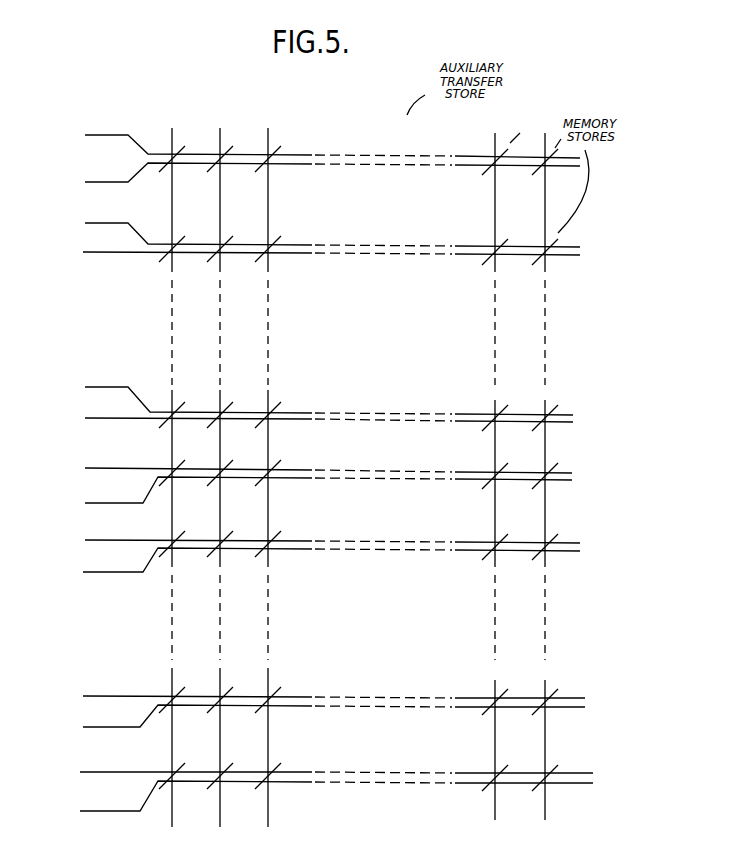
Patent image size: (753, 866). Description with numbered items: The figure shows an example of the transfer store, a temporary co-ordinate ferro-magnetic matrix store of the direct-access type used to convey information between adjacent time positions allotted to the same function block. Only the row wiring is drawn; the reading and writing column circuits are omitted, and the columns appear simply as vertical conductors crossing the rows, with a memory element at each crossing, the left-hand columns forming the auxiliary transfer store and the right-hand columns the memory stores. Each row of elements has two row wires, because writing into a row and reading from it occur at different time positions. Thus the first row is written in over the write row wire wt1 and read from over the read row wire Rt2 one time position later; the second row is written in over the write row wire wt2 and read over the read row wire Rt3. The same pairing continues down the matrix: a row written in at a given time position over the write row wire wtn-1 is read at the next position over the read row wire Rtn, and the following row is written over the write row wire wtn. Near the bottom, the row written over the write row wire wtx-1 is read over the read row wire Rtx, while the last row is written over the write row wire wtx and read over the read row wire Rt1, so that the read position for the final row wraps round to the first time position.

The write row wire wt1 is at (320, 137).
The read row wire Rt2 is at (318, 172).
The write row wire wt2 is at (317, 226).
The read row wire Rt3 is at (315, 264).
The write row wire wtn-1 is at (310, 390).
The read row wire Rtn is at (312, 409).
The write row wire wtn is at (312, 459).
The write row wire wtx-1 is at (312, 684).
The read row wire Rtx is at (311, 716).
The write row wire wtx is at (316, 760).
The read row wire Rt1 is at (314, 796).